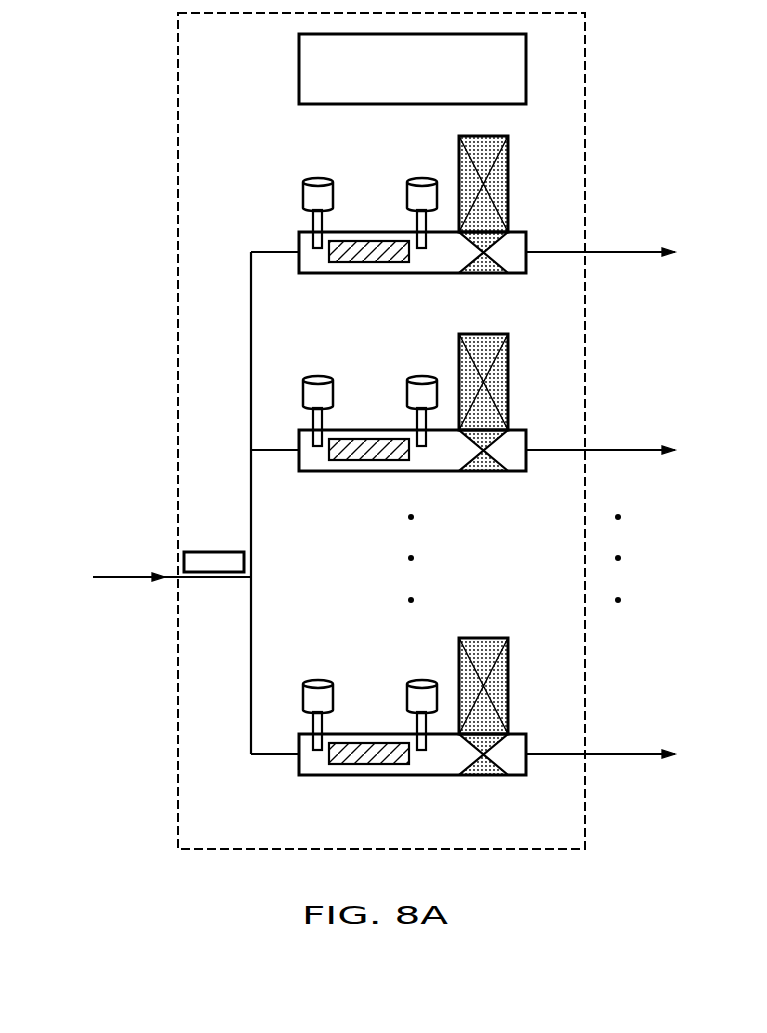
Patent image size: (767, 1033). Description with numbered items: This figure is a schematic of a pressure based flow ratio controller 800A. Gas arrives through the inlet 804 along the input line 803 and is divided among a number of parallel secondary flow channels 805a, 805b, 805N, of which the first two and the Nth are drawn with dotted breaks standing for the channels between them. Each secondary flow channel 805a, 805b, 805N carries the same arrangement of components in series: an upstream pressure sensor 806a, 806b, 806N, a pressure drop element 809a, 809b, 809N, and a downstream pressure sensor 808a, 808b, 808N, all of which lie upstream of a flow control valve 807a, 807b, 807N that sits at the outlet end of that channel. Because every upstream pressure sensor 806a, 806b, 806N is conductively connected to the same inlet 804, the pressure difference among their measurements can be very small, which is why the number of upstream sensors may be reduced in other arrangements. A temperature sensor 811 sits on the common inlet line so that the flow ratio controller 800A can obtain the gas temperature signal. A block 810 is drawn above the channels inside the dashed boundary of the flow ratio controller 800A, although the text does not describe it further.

The flow ratio controller 800A is at (627, 61).
The inlet flow line 803 is at (106, 579).
The inlet 804 is at (131, 542).
The secondary flow channel 805a is at (641, 255).
The secondary flow channel 805b is at (641, 453).
The secondary flow channel 805N is at (641, 757).
The upstream pressure sensor 806a is at (318, 176).
The upstream pressure sensor 806b is at (318, 374).
The upstream pressure sensor 806N is at (318, 678).
The flow control valve 807a is at (508, 168).
The flow control valve 807b is at (508, 366).
The flow control valve 807N is at (508, 670).
The downstream pressure sensor 808a is at (420, 176).
The downstream pressure sensor 808b is at (420, 374).
The downstream pressure sensor 808N is at (420, 678).
The pressure drop element 809a is at (376, 268).
The pressure drop element 809b is at (376, 466).
The pressure drop element 809N is at (376, 770).
The controller 810 is at (433, 82).
The temperature sensor 811 is at (216, 552).